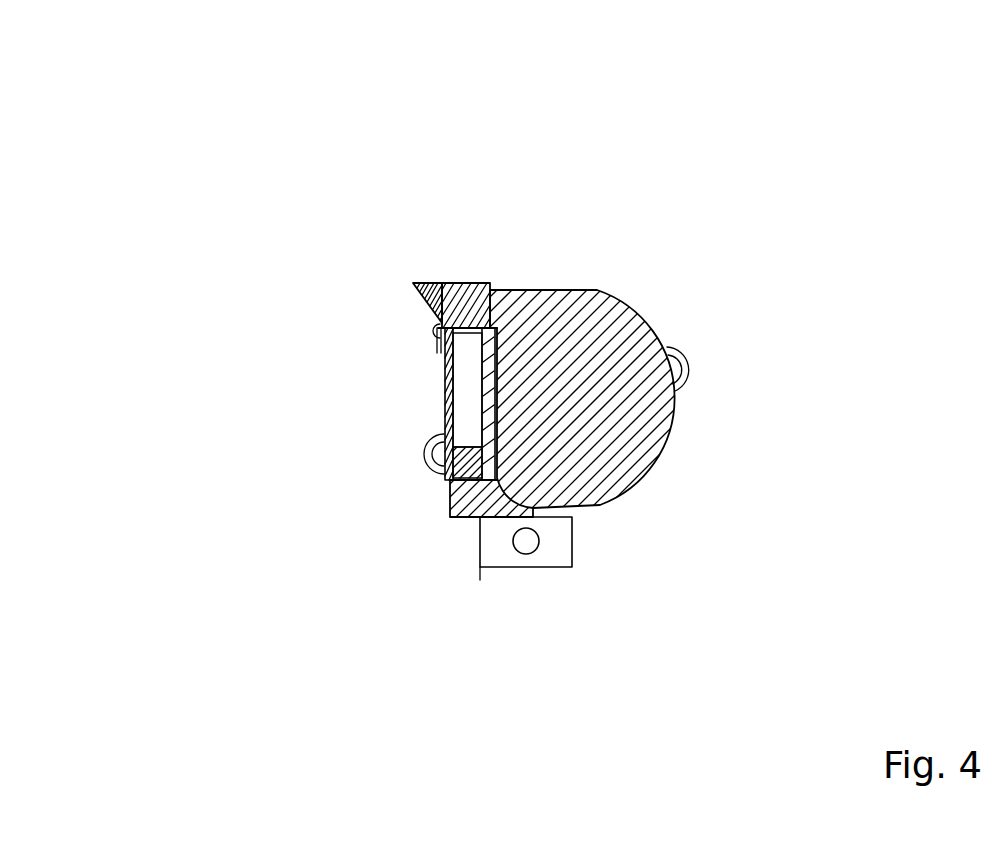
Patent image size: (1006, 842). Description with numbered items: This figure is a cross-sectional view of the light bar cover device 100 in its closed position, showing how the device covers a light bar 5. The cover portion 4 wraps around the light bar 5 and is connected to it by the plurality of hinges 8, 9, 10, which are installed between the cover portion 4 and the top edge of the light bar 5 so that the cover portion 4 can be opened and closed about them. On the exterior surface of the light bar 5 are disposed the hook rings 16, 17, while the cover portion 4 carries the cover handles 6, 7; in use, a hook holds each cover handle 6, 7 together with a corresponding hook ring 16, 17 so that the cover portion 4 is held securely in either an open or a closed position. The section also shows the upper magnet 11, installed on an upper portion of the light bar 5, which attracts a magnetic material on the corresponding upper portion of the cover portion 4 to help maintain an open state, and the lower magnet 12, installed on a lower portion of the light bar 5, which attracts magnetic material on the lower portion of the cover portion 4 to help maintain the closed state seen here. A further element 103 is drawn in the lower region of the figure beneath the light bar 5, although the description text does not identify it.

The light bar cover device 100 is at (208, 50).
The cover portion 4 is at (321, 361).
The light bar 5 is at (593, 288).
The cover handle 6 is at (423, 453).
The cover handle 7 is at (333, 475).
The hinge 8 is at (310, 321).
The hinge 9 is at (343, 321).
The hinge 10 is at (361, 320).
The upper magnet 11 is at (418, 283).
The lower magnet 12 is at (450, 483).
The hook ring 16 is at (691, 355).
The hook ring 17 is at (769, 354).
The connector block 103 is at (557, 539).